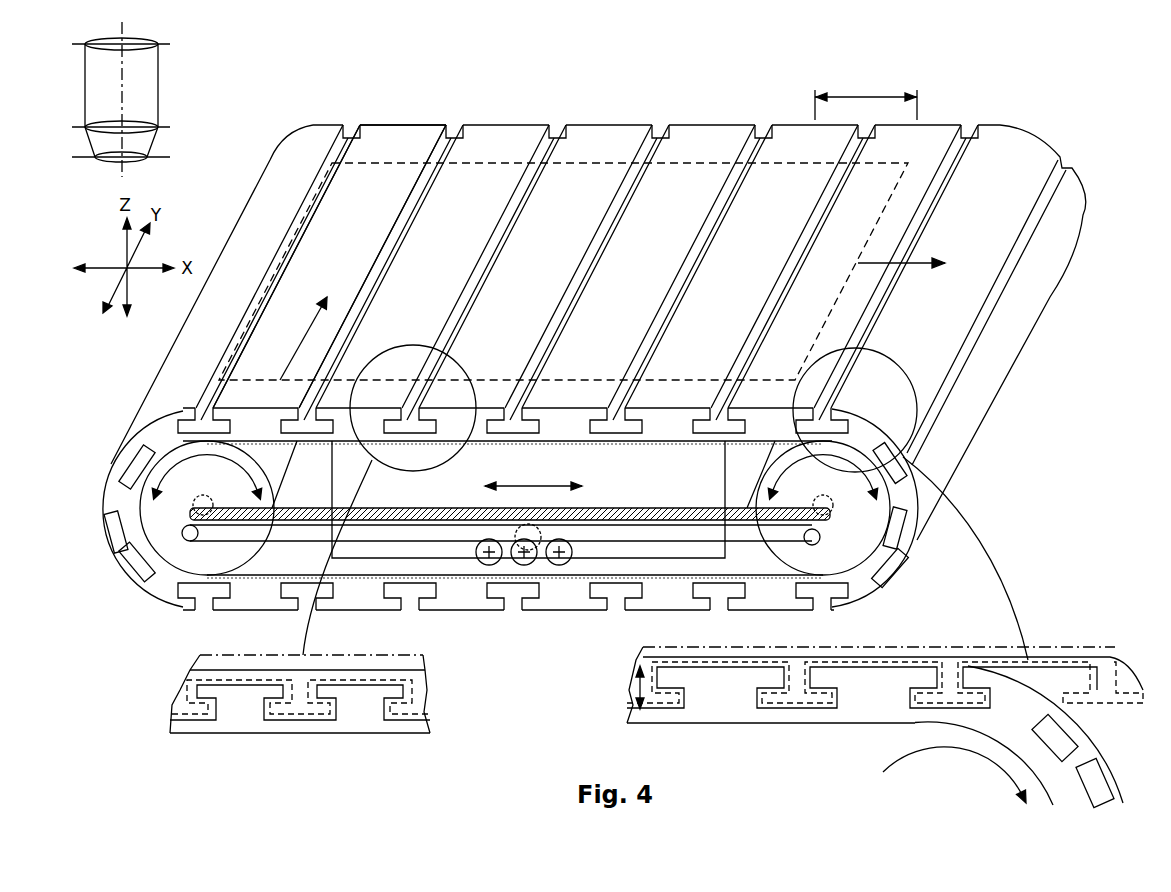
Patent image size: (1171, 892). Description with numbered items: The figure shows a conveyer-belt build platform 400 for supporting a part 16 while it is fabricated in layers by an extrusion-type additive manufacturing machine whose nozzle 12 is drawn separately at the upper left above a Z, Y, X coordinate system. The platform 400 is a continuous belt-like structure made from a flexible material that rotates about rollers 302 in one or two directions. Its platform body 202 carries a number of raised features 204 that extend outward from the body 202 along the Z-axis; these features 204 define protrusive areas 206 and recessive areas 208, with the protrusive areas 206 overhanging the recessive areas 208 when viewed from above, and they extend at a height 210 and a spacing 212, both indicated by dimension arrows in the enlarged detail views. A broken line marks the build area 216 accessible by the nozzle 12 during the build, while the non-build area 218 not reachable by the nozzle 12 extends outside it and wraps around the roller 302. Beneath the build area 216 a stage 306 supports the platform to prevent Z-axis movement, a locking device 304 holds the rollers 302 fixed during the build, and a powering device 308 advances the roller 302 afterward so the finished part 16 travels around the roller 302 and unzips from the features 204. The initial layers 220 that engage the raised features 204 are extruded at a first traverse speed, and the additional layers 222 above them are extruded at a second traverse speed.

The nozzle 12 is at (145, 88).
The part 16 is at (1075, 622).
The platform body 202 is at (280, 722).
The raised features 204 is at (365, 695).
The protrusive areas 206 is at (418, 140).
The recessive areas 208 is at (455, 132).
The height 210 is at (638, 687).
The spacing 212 is at (872, 92).
The build area 216 is at (311, 330).
The non-build area 218 is at (880, 260).
The first layers 220 is at (951, 668).
The additional layers 222 is at (975, 660).
The roller 302 is at (868, 778).
The locking device 304 is at (562, 563).
The stage 306 is at (479, 561).
The powering device 308 is at (519, 563).
The conveyer-belt build platform 400 is at (950, 92).